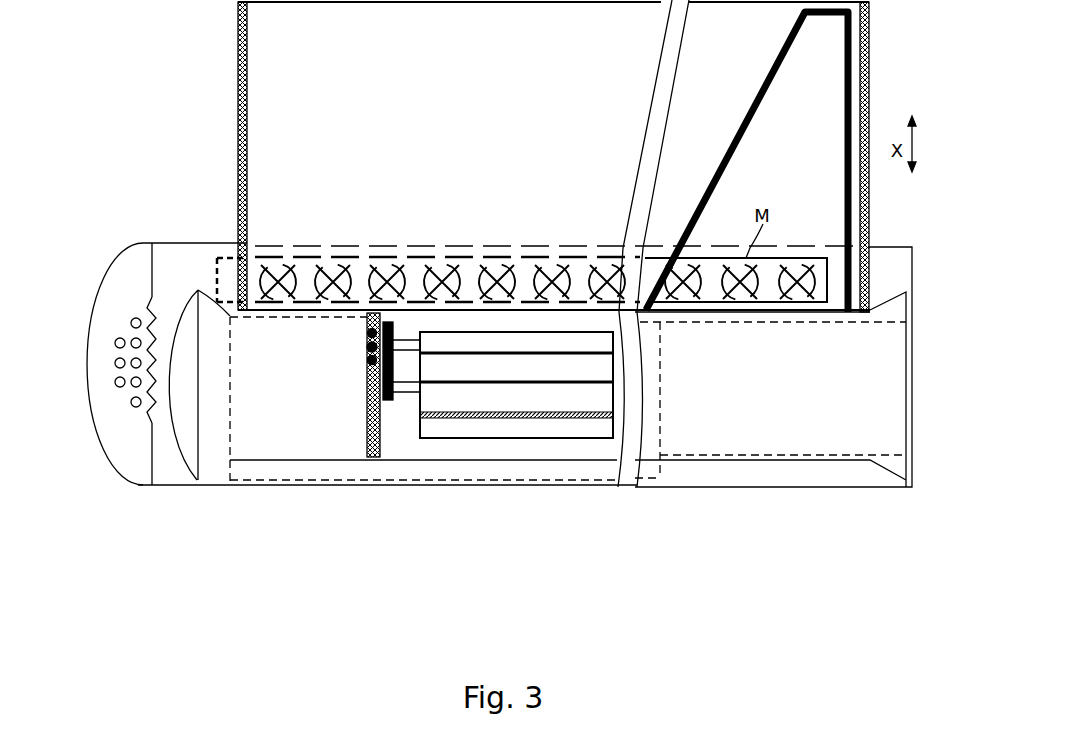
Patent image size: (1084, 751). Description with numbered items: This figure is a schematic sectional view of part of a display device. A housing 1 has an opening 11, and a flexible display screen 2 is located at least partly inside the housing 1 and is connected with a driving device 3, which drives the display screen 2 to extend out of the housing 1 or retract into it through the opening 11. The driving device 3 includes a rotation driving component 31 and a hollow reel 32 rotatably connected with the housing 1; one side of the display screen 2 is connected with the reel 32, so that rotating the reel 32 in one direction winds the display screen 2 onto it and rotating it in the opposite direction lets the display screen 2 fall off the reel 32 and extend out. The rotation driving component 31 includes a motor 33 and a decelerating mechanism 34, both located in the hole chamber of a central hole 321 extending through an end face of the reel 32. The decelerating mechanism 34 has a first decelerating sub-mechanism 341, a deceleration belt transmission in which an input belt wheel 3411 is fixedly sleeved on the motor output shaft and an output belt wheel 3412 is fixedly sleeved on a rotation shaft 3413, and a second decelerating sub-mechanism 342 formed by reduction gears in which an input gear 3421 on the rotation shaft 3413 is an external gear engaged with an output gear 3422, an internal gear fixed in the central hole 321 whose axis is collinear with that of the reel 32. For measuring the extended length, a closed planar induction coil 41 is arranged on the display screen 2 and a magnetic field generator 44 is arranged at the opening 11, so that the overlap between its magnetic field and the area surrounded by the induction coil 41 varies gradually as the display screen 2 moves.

The housing 1 is at (153, 246).
The display screen 2 is at (262, 66).
The driving device 3 is at (232, 462).
The opening 11 is at (307, 250).
The rotation driving component 31 is at (443, 613).
The reel 32 is at (277, 440).
The motor 33 is at (555, 415).
The decelerating mechanism 34 is at (375, 568).
The induction coil 41 is at (842, 97).
The magnetic field generator 44 is at (216, 247).
The central hole 321 is at (405, 324).
The first decelerating sub-mechanism 341 is at (452, 532).
The second decelerating sub-mechanism 342 is at (397, 532).
The input belt wheel 3411 is at (393, 362).
The output belt wheel 3412 is at (423, 358).
The rotation shaft 3413 is at (430, 347).
The input gear 3421 is at (368, 345).
The output gear 3422 is at (388, 400).